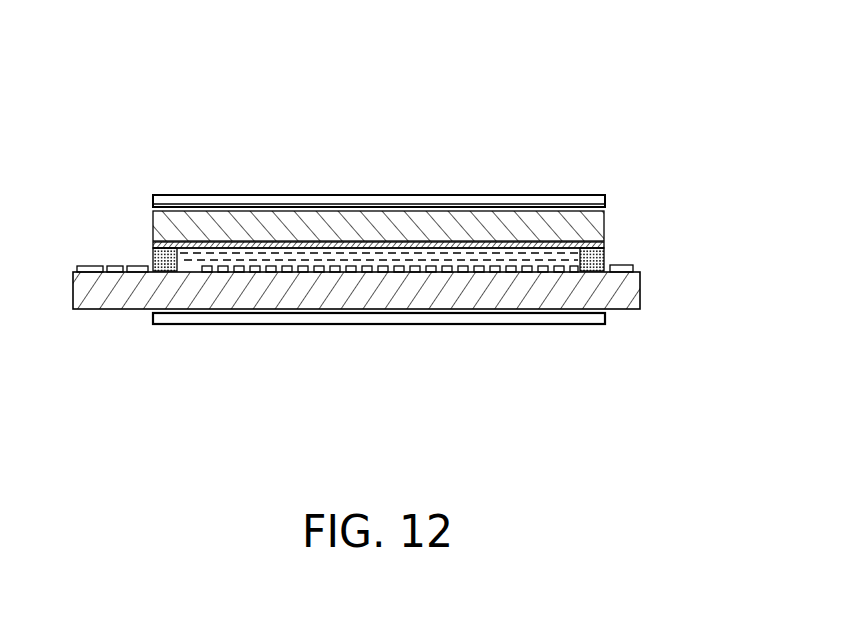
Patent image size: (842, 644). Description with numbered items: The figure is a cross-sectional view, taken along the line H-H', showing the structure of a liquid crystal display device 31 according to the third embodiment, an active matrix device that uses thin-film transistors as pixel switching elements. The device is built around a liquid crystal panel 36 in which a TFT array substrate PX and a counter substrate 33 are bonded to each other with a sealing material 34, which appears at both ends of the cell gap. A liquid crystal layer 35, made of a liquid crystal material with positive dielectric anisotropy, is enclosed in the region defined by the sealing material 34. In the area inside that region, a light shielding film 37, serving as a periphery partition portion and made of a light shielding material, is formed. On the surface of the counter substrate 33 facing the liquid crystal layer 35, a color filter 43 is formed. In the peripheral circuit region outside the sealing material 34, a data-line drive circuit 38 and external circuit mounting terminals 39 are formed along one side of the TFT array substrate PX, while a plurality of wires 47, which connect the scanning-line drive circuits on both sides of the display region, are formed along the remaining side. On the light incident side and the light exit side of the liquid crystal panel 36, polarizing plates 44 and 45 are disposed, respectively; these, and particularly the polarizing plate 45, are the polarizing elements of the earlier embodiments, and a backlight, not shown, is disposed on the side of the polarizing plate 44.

The liquid crystal display device 31 is at (393, 104).
The counter substrate 33 is at (453, 216).
The sealing material 34 is at (603, 253).
The liquid crystal layer 35 is at (367, 256).
The liquid crystal panel 36 is at (445, 263).
The light shielding film 37 is at (545, 246).
The data-line drive circuit 38 is at (138, 266).
The external circuit mounting terminals 39 is at (92, 266).
The color filter 43 is at (292, 245).
The polarizing plate 44 is at (237, 320).
The polarizing plate 45 is at (232, 195).
The wires 47 is at (628, 276).
The TFT array substrate PX is at (453, 290).